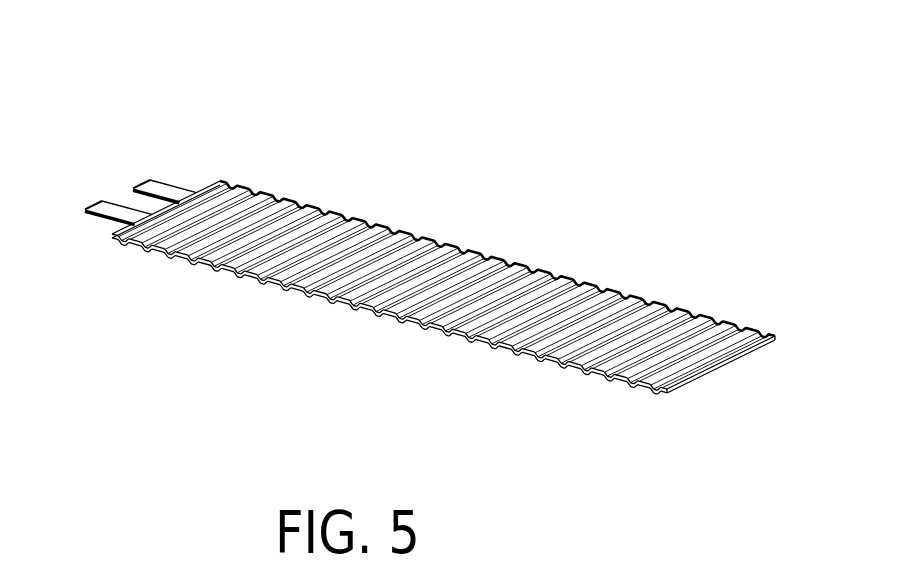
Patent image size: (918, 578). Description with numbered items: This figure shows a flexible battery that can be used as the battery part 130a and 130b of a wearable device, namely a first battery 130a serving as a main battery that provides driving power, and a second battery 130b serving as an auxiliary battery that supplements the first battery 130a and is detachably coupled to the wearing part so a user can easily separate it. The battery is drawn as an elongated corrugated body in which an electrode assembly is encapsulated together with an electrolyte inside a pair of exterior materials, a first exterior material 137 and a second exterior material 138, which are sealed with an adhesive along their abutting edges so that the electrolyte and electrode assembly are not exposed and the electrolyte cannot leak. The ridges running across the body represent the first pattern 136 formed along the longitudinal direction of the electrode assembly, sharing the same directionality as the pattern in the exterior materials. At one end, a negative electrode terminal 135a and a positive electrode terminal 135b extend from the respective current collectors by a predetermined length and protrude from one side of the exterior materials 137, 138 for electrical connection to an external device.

The first battery 130a is at (445, 36).
The second battery 130b is at (507, 36).
The negative electrode terminal 135a is at (165, 190).
The positive electrode terminal 135b is at (112, 208).
The first pattern 136 is at (422, 262).
The first exterior material 137 is at (627, 294).
The second exterior material 138 is at (565, 367).